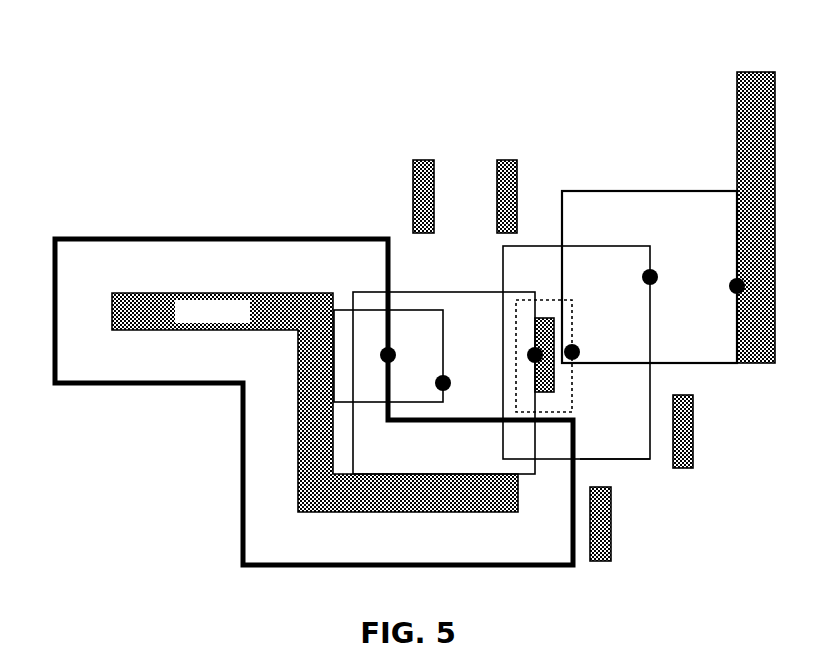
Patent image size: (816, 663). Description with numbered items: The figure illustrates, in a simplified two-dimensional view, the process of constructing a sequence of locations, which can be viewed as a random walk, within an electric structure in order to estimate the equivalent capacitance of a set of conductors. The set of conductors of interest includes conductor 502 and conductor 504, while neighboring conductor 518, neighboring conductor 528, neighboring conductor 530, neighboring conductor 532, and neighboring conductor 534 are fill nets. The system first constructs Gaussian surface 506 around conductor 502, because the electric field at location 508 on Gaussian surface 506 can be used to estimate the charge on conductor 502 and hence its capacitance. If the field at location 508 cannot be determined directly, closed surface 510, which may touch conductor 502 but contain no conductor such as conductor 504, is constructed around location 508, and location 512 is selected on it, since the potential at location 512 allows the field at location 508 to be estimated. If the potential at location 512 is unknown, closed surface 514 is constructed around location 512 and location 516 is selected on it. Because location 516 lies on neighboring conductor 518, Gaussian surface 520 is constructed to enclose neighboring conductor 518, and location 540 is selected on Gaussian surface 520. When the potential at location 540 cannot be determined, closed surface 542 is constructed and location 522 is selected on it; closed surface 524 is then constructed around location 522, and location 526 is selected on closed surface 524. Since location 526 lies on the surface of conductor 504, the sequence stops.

The conductor 502 is at (315, 402).
The conductor 504 is at (756, 205).
The Gaussian surface 506 is at (102, 238).
The location 508 is at (388, 344).
The closed surface 510 is at (370, 310).
The location 512 is at (464, 383).
The closed surface 514 is at (406, 292).
The location 516 is at (530, 353).
The neighboring conductor 518 is at (555, 378).
The Gaussian surface 520 is at (569, 300).
The location 522 is at (644, 282).
The closed surface 524 is at (645, 189).
The location 526 is at (732, 280).
The neighboring conductor 528 is at (423, 181).
The neighboring conductor 530 is at (507, 181).
The neighboring conductor 532 is at (600, 537).
The neighboring conductor 534 is at (708, 431).
The location 540 is at (592, 346).
The closed surface 542 is at (627, 460).